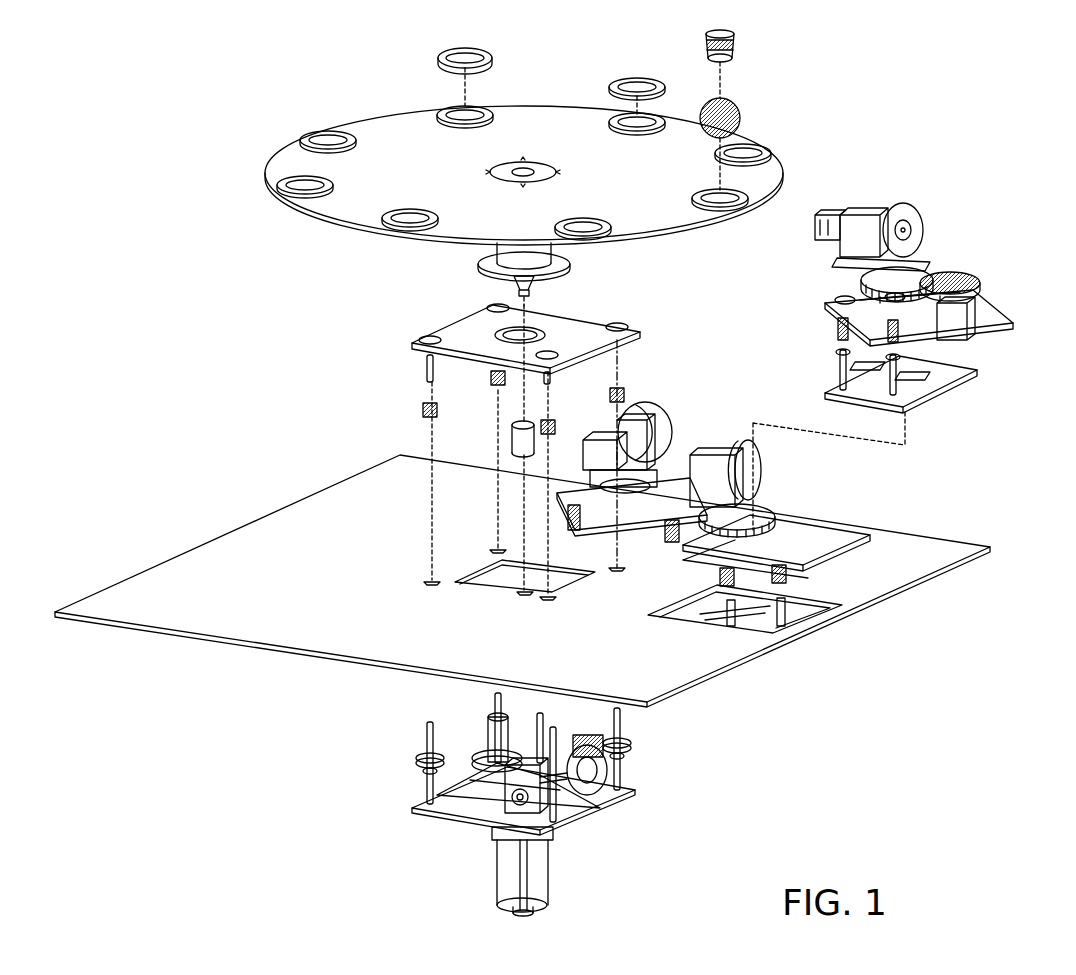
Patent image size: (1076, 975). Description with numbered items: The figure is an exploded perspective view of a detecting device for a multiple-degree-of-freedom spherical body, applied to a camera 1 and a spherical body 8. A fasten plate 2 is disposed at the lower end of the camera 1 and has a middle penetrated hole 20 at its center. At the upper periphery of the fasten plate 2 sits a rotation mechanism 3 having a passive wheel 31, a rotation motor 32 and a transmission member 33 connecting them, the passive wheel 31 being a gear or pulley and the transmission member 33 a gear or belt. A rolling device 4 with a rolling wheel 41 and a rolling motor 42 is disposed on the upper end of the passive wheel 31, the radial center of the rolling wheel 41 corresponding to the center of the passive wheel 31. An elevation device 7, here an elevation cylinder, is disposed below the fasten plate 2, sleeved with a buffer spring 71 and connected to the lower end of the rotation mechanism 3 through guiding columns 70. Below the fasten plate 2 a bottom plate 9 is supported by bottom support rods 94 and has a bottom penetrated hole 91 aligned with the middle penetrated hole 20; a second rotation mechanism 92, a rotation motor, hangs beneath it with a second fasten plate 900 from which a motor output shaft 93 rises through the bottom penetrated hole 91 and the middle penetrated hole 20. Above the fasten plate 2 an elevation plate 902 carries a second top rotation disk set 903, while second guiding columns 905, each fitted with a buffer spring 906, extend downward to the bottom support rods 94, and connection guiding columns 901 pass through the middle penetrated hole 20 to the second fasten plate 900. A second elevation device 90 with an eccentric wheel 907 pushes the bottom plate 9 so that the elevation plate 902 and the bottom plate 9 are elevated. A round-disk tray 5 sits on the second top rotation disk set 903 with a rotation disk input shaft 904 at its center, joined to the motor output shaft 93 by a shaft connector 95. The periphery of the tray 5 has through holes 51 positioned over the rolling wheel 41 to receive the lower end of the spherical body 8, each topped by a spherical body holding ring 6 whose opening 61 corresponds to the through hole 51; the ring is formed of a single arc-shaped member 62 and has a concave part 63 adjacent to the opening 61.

The camera 1 is at (737, 47).
The fasten plate 2 is at (163, 577).
The rotation mechanism 3 is at (988, 283).
The rolling device 4 is at (925, 195).
The tray 5 is at (284, 160).
The spherical body holding ring 6 is at (497, 58).
The elevation device 7 is at (972, 386).
The spherical body 8 is at (743, 115).
The bottom plate 9 is at (617, 806).
The middle penetrated hole 20 is at (462, 576).
The passive wheel 31 is at (927, 250).
The rotation motor 32 is at (977, 307).
The transmission member 33 is at (942, 272).
The rolling wheel 41 is at (895, 208).
The rolling motor 42 is at (838, 250).
The through holes 51 is at (457, 108).
The opening 61 is at (450, 50).
The arc-shaped member 62 is at (490, 62).
The concave part 63 is at (470, 47).
The guiding columns 70 is at (838, 364).
The buffer spring 71 is at (835, 320).
The second elevation device 90 is at (620, 730).
The bottom penetrated hole 91 is at (568, 793).
The second rotation mechanism 92 is at (507, 867).
The motor output shaft 93 is at (503, 773).
The bottom support rods 94 is at (425, 783).
The shaft connector 95 is at (510, 437).
The second fasten plate 900 is at (490, 762).
The connection guiding columns 901 is at (487, 737).
The elevation plate 902 is at (412, 345).
The second top rotation disk set 903 is at (477, 265).
The rotation disk input shaft 904 is at (533, 290).
The second guiding columns 905 is at (425, 372).
The buffer spring 906 is at (422, 410).
The eccentric wheel 907 is at (607, 768).